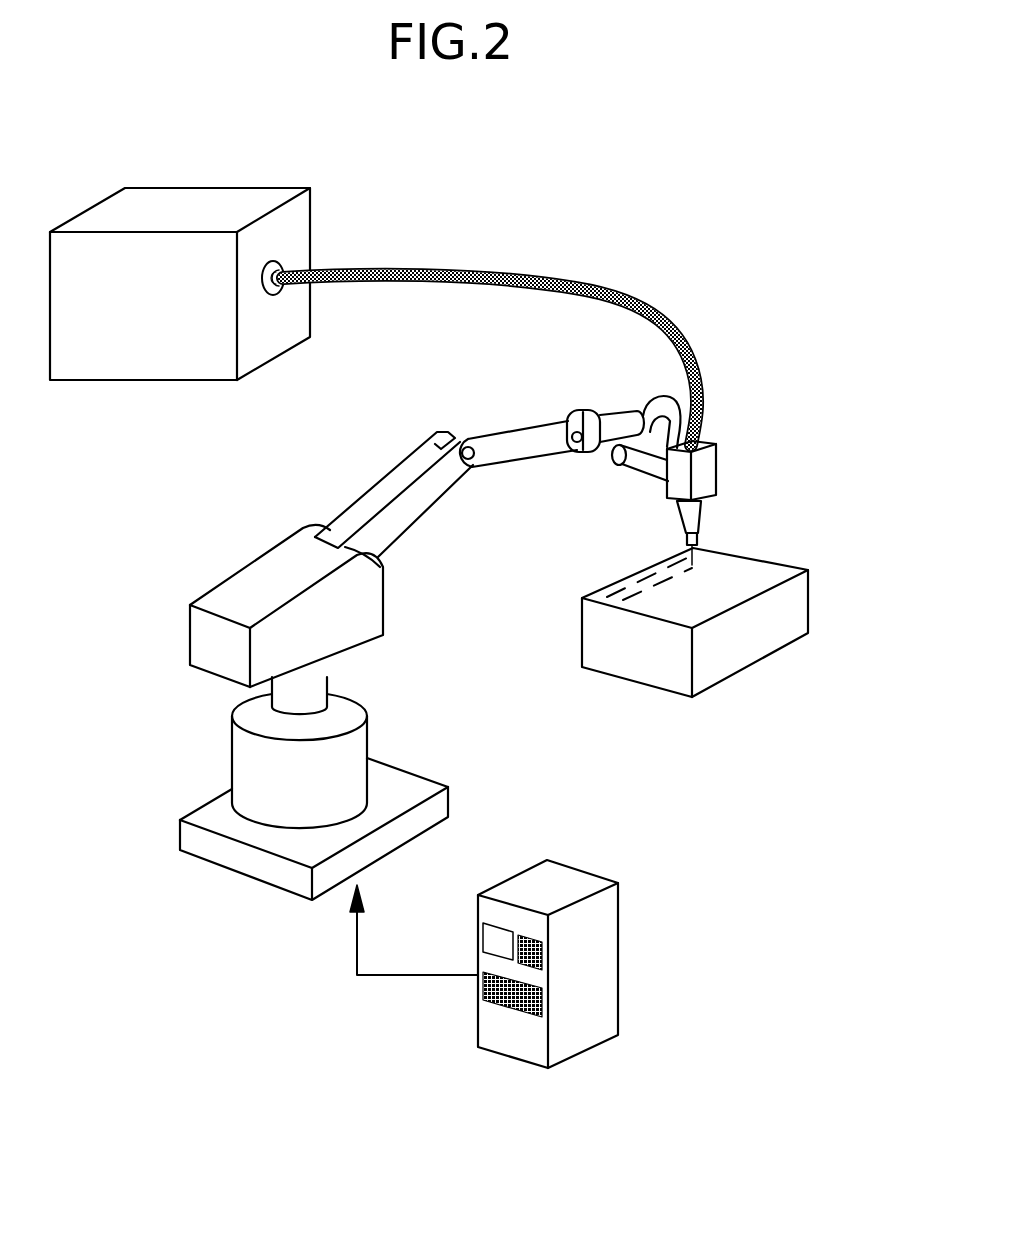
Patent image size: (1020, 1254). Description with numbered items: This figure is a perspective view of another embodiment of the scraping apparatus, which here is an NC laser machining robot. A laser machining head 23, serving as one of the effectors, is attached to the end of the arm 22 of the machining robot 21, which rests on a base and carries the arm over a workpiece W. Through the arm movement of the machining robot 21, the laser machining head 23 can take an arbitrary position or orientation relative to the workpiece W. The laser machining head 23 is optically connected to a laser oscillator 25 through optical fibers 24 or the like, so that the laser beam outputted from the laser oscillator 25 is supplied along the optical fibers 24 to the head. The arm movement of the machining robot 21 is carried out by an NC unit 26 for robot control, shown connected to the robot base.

The machining robot 21 is at (412, 618).
The arm 22 is at (520, 442).
The laser machining head 23 is at (707, 470).
The optical fibers 24 is at (603, 285).
The laser oscillator 25 is at (215, 212).
The NC unit 26 is at (578, 883).
The workpiece W is at (770, 575).